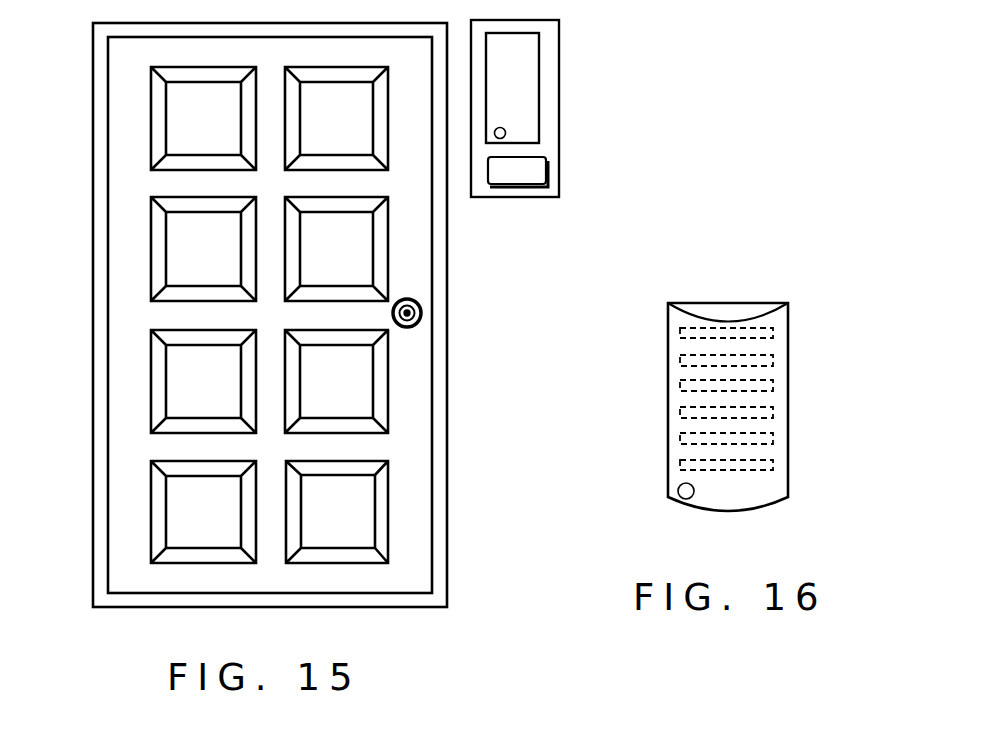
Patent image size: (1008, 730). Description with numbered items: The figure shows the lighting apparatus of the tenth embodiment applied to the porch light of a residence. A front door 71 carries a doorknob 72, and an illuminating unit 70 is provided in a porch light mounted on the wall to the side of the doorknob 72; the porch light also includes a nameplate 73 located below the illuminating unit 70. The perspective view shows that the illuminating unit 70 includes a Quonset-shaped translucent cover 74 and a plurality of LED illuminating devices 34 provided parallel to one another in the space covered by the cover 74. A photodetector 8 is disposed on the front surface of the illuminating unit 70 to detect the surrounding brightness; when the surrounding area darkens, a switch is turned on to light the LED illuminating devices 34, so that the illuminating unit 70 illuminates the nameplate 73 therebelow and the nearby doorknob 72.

In FIG. 15, the photodetector 8 is at (500, 127).
In FIG. 16, the photodetector 8 is at (678, 492).
In FIG. 16, the LED illuminating devices 34 is at (716, 333).
In FIG. 15, the illuminating unit 70 is at (540, 128).
In FIG. 16, the illuminating unit 70 is at (794, 352).
In FIG. 15, the front door 71 is at (125, 313).
In FIG. 15, the doorknob 72 is at (421, 313).
In FIG. 15, the nameplate 73 is at (519, 189).
In FIG. 16, the translucent cover 74 is at (773, 485).